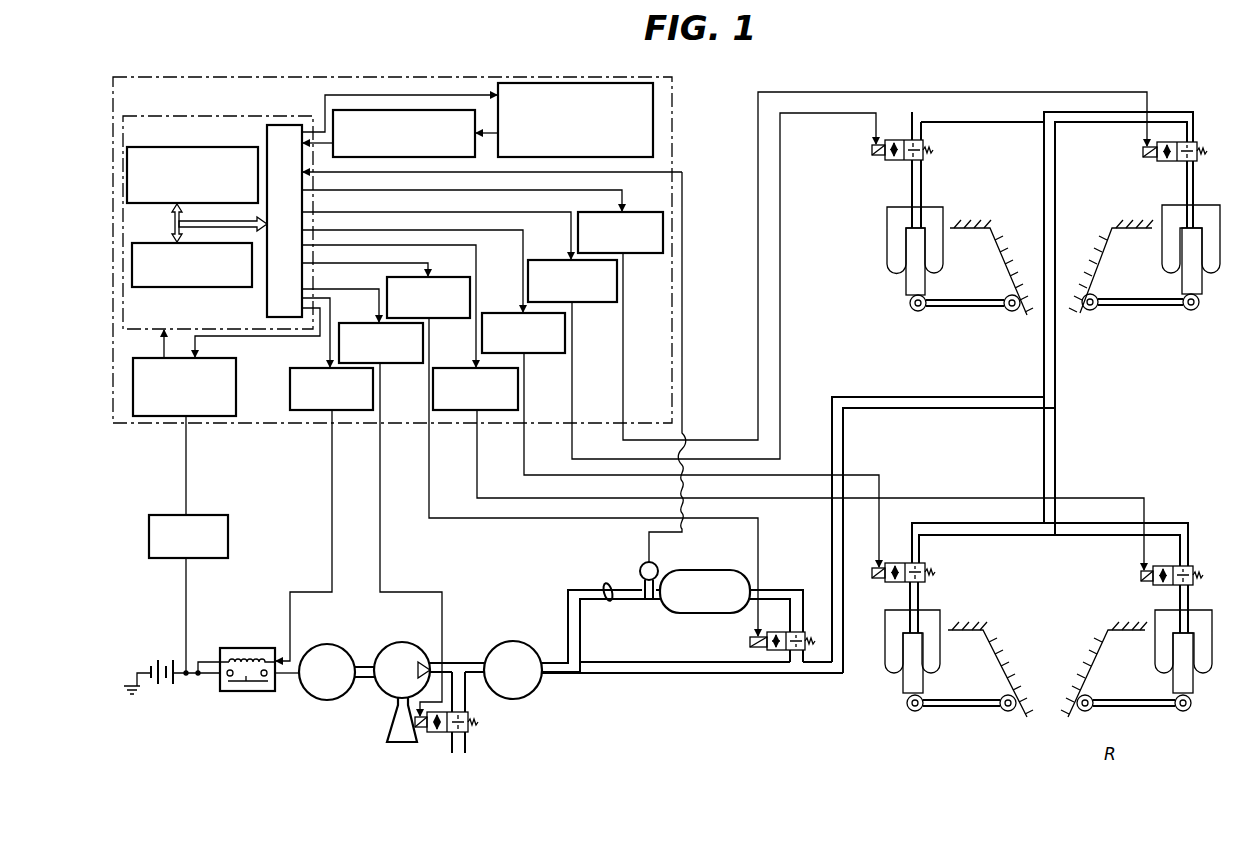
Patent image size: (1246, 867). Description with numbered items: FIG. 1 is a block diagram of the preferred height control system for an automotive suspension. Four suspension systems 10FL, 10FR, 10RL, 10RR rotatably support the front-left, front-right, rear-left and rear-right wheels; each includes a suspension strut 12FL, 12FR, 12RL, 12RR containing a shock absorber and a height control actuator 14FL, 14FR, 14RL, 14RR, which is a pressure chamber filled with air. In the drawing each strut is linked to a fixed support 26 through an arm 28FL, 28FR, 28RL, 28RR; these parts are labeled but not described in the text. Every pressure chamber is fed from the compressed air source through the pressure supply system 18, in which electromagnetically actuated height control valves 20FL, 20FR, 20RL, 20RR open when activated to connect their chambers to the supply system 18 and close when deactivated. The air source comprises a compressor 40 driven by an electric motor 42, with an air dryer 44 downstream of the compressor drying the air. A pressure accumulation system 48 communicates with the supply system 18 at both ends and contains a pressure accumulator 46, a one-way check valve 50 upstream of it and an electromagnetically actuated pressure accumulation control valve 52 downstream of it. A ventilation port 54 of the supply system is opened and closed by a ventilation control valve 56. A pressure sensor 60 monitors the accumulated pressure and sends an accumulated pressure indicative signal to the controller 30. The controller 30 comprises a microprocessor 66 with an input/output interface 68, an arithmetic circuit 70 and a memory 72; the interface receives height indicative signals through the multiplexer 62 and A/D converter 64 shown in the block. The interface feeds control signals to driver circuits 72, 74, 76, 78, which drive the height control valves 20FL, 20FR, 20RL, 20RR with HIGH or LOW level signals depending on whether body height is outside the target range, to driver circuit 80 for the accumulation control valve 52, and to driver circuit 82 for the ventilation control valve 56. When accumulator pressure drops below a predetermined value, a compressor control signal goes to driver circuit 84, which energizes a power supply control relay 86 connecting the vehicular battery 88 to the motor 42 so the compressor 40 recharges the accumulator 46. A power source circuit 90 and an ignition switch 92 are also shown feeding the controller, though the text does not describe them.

The front-left suspension system 10FL is at (903, 306).
The front-right suspension system 10FR is at (1193, 312).
The rear-left suspension system 10RL is at (900, 712).
The rear-right suspension system 10RR is at (1190, 712).
The front-left suspension strut 12FL is at (906, 280).
The front-right suspension strut 12FR is at (1182, 280).
The rear-left suspension strut 12RL is at (903, 685).
The rear-right suspension strut 12RR is at (1173, 680).
The front-left height control actuator means 14FL is at (895, 226).
The front-right height control actuator means 14FR is at (1175, 218).
The rear-left height control actuator means 14RL is at (928, 622).
The rear-right height control actuator means 14RR is at (1162, 620).
The pressure supply system 18 is at (844, 437).
The front-left height control valve means 20FL is at (925, 158).
The front-right height control valve means 20FR is at (1196, 142).
The rear-left height control valve means 20RL is at (903, 572).
The rear-right height control valve means 20RR is at (1196, 565).
The vehicle body / fixed support 26 is at (1003, 258).
The front left suspension arm 28FL is at (943, 308).
The front right suspension arm 28FR is at (1145, 308).
The rear left suspension arm 28RL is at (955, 708).
The rear right suspension arm 28RR is at (1145, 708).
The controller 30 is at (388, 76).
The compressor 40 is at (403, 642).
The electric motor 42 is at (330, 644).
The air dryer 44 is at (510, 641).
The pressure accumulator 46 is at (715, 570).
The pressure accumulation system 48 is at (762, 586).
The one-way check valve 50 is at (605, 590).
The pressure accumulation control valve 52 is at (803, 630).
The ventilation port 54 is at (468, 753).
The ventilation control valve 56 is at (440, 735).
The pressure sensor 60 is at (642, 565).
The multiplexer 62 is at (585, 83).
The A/D converter 64 is at (440, 110).
The microprocessor 66 is at (193, 116).
The input/output interface 68 is at (290, 125).
The arithmetic circuit 70 is at (160, 147).
The memory 72 is at (200, 287).
The driver circuit 74 is at (642, 212).
The driver circuit 76 is at (446, 368).
The driver circuit 78 is at (495, 313).
The driver circuit 80 is at (455, 277).
The driver circuit 82 is at (358, 323).
The driver circuit 84 is at (300, 368).
The power supply control relay 86 is at (255, 648).
The vehicular battery 88 is at (160, 657).
The power source circuit 90 is at (236, 396).
The ignition switch 92 is at (208, 515).